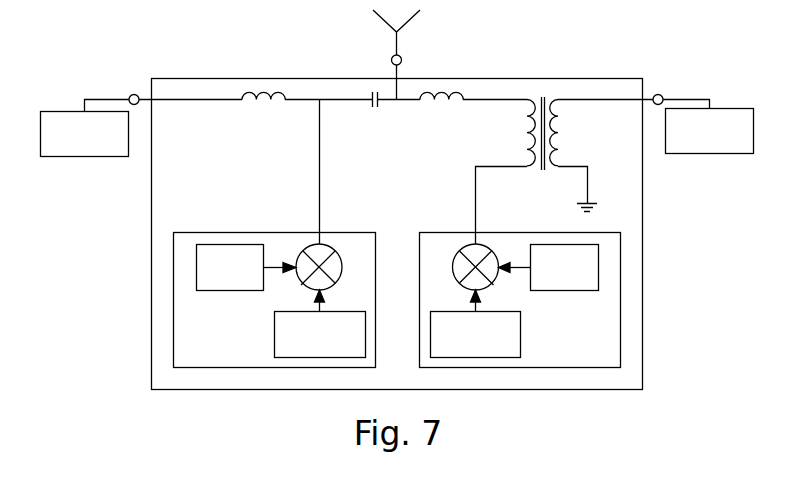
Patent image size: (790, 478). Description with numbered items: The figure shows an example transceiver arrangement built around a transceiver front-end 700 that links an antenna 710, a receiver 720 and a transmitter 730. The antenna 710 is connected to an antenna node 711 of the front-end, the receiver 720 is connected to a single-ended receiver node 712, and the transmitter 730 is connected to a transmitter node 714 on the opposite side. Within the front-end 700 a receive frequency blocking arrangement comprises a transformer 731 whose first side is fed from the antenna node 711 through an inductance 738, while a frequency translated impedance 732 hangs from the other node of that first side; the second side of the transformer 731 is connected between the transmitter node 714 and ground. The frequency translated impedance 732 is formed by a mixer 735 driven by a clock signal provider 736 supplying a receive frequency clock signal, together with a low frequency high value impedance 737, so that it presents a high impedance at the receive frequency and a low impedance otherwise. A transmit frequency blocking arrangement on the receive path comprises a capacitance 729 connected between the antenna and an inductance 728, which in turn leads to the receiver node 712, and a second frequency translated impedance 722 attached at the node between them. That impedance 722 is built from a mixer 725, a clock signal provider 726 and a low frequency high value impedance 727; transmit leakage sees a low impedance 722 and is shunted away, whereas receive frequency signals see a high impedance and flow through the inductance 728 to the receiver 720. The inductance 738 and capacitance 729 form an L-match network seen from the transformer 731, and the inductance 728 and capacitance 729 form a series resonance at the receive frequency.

The transceiver front-end 700 is at (577, 78).
The antenna 710 is at (383, 20).
The antenna node 711 is at (402, 61).
The receiver node 712 is at (128, 96).
The transmit port 714 is at (663, 96).
The receiver 720 is at (85, 134).
The frequency translated impedance 722 is at (332, 267).
The mixer 725 is at (303, 283).
The clock signal provider 726 is at (247, 269).
The low frequency high value impedance 727 is at (320, 324).
The inductance 728 is at (240, 101).
The capacitance 729 is at (370, 104).
The transmitter 730 is at (710, 131).
The transformer 731 is at (530, 128).
The frequency translated impedance 732 is at (462, 267).
The mixer 735 is at (492, 283).
The clock signal provider 736 is at (549, 269).
The low frequency high value impedance 737 is at (476, 324).
The inductance 738 is at (420, 102).